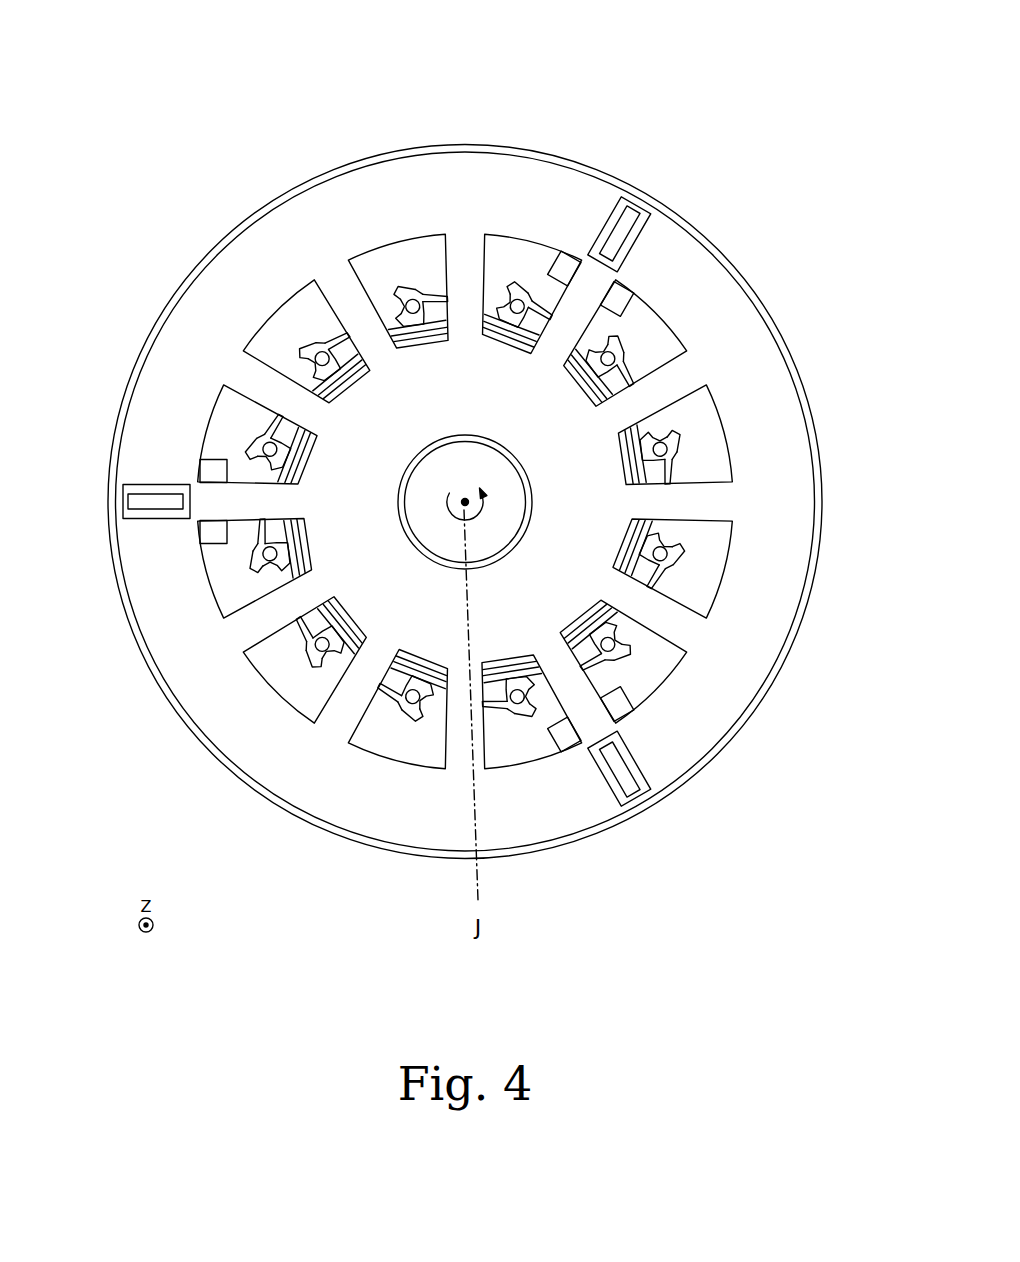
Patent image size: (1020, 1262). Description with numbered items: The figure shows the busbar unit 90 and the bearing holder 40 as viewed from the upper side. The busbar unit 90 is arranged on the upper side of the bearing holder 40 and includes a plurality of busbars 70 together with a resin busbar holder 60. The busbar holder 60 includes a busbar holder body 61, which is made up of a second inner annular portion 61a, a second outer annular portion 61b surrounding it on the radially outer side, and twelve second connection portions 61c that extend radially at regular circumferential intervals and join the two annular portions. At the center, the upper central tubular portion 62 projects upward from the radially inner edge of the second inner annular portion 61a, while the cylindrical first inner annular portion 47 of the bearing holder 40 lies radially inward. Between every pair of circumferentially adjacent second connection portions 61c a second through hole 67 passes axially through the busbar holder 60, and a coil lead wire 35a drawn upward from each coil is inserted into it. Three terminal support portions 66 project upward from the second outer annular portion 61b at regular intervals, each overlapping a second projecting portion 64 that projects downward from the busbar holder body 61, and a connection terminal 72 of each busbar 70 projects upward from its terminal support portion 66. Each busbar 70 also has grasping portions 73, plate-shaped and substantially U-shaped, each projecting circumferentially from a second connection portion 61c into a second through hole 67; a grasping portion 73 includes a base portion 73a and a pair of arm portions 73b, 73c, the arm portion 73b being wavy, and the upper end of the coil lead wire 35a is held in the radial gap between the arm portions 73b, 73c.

The busbar unit 90 is at (652, 112).
The bearing holder 40 is at (800, 352).
The busbar holder 60 is at (473, 136).
The busbar holder body 61 is at (450, 84).
The second inner annular portion 61a is at (430, 395).
The second outer annular portion 61b is at (318, 208).
The second connection portion 61c is at (363, 307).
The upper central tubular portion 62 is at (681, 350).
The second through hole 67 is at (300, 722).
The busbar 70 is at (311, 327).
The grasping portion 73 is at (531, 292).
The base portion 73a is at (603, 655).
The arm portion 73b is at (595, 663).
The arm portion 73c is at (623, 620).
The coil lead wire 35a is at (512, 300).
The second projecting portion 64 is at (622, 296).
The connection terminal 72 is at (651, 212).
The terminal support portion 66 is at (628, 228).
The first inner annular portion 47 is at (518, 458).